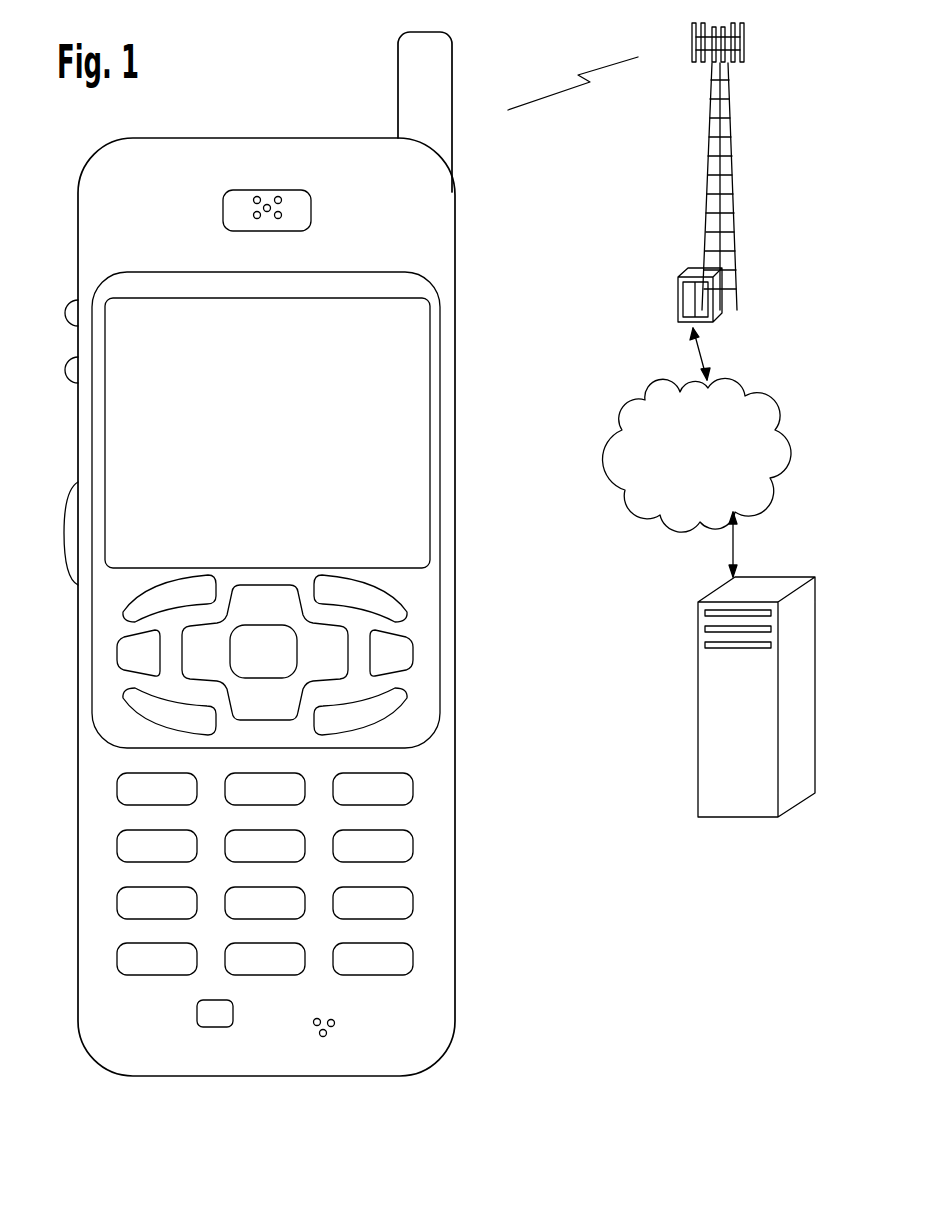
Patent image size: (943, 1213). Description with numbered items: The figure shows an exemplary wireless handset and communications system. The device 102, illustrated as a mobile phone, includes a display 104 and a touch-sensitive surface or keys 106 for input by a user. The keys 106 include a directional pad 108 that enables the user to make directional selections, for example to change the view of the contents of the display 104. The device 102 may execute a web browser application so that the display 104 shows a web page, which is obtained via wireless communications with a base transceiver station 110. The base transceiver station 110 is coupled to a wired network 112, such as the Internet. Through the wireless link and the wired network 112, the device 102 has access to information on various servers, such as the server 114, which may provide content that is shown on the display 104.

The device 102 is at (124, 1078).
The display 104 is at (446, 300).
The keys 106 is at (522, 577).
The directional pad 108 is at (462, 575).
The base transceiver station 110 is at (705, 185).
The wired network 112 is at (626, 497).
The server 114 is at (702, 816).